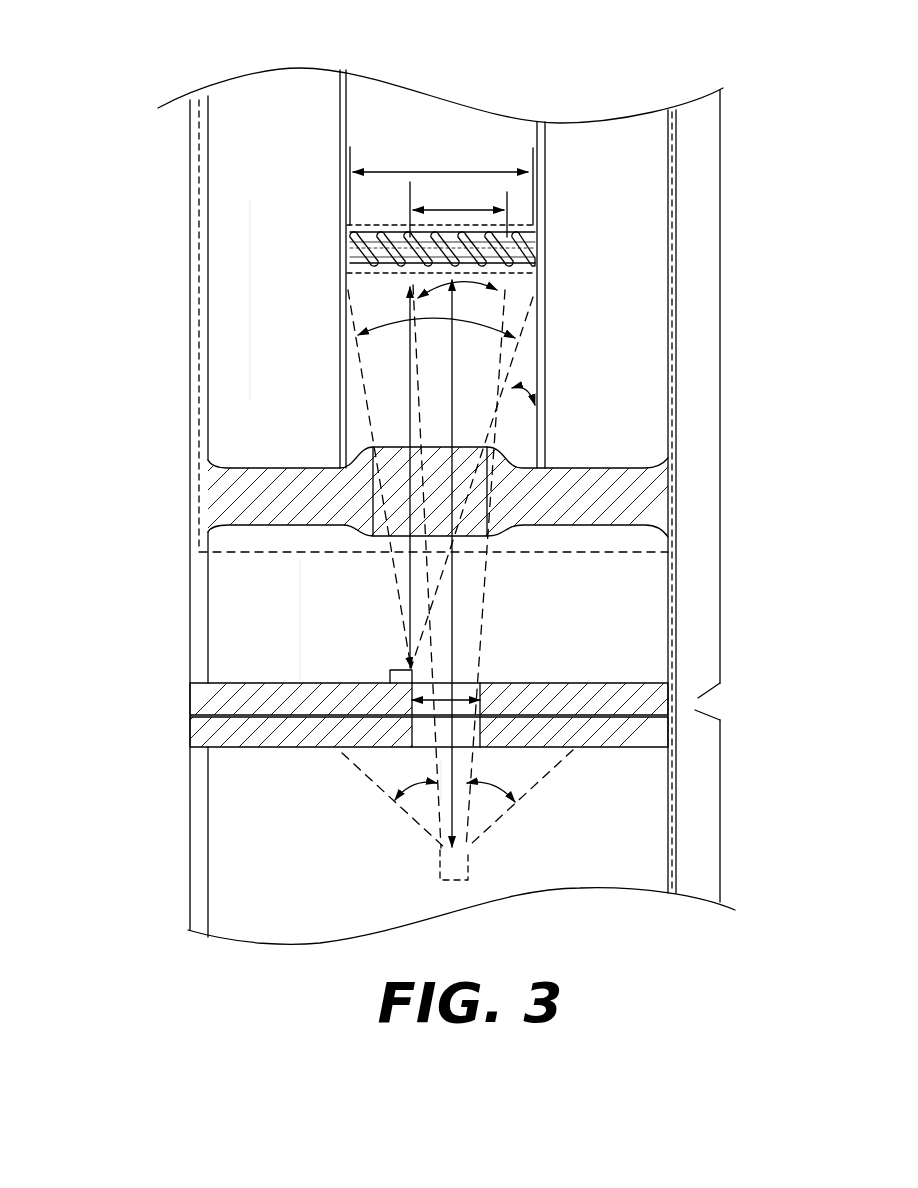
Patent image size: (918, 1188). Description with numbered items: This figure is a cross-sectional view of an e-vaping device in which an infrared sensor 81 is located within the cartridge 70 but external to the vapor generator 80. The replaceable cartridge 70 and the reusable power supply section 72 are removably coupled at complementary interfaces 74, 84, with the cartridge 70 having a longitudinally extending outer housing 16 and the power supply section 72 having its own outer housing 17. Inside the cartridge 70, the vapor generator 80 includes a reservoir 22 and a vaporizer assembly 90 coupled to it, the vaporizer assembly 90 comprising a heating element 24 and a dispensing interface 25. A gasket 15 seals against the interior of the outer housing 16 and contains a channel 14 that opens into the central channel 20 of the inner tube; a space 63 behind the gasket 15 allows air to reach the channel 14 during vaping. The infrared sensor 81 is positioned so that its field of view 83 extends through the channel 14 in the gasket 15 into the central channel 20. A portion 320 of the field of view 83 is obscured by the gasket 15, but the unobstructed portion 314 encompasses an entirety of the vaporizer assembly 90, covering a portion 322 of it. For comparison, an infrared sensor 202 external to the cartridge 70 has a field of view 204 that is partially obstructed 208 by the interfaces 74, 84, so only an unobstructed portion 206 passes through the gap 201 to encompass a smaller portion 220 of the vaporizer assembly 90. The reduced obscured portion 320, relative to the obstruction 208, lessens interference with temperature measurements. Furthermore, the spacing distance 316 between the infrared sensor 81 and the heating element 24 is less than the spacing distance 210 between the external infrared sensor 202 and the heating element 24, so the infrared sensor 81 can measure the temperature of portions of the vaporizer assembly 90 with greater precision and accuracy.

The channel 14 is at (388, 543).
The gasket 15 is at (583, 511).
The outer housing 16 is at (197, 628).
The outer housing 17 is at (197, 872).
The central channel 20 is at (367, 124).
The reservoir 22 is at (234, 184).
The heating element 24 is at (525, 224).
The dispensing interface 25 is at (350, 243).
The space 63 is at (241, 621).
The cartridge 70 is at (720, 508).
The power supply section 72 is at (720, 827).
The interface 74 is at (197, 702).
The vapor generator 80 is at (200, 442).
The infrared sensor 81 is at (408, 667).
The field of view 83 is at (365, 385).
The interface 84 is at (200, 735).
The vaporizer assembly 90 is at (367, 223).
The gap 201 is at (462, 683).
The infrared sensor 202 is at (440, 865).
The field of view 204 is at (380, 793).
The unobstructed portion 206 is at (483, 288).
The obstruction 208 is at (528, 792).
The spacing distance 210 is at (445, 760).
The portion 220 is at (472, 210).
The unobstructed portion 314 is at (358, 333).
The spacing distance 316 is at (410, 575).
The obscured portion 320 is at (540, 385).
The portion 322 is at (433, 172).